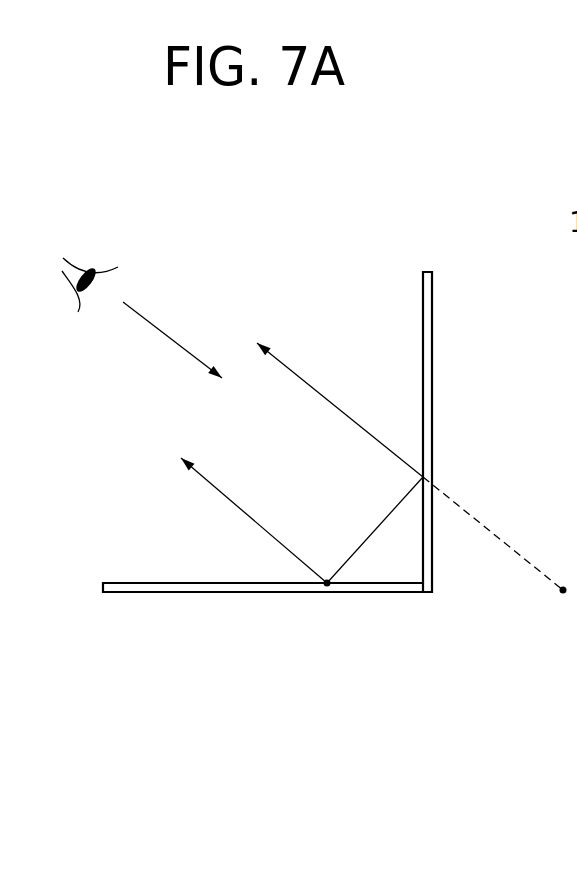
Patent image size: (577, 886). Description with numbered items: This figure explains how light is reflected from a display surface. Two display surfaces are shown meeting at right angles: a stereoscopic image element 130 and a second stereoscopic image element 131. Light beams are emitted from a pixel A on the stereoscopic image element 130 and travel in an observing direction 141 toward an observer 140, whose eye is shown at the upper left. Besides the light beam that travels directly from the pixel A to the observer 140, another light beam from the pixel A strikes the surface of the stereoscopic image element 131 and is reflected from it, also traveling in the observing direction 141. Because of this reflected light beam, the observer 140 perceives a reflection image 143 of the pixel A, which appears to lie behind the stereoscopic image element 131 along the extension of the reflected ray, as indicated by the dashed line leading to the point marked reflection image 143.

The stereoscopic image element 130 is at (158, 592).
The stereoscopic image element 131 is at (432, 292).
The observer 140 is at (79, 263).
The observing direction 141 is at (145, 325).
The reflection image 143 is at (563, 595).
The pixel A is at (327, 590).